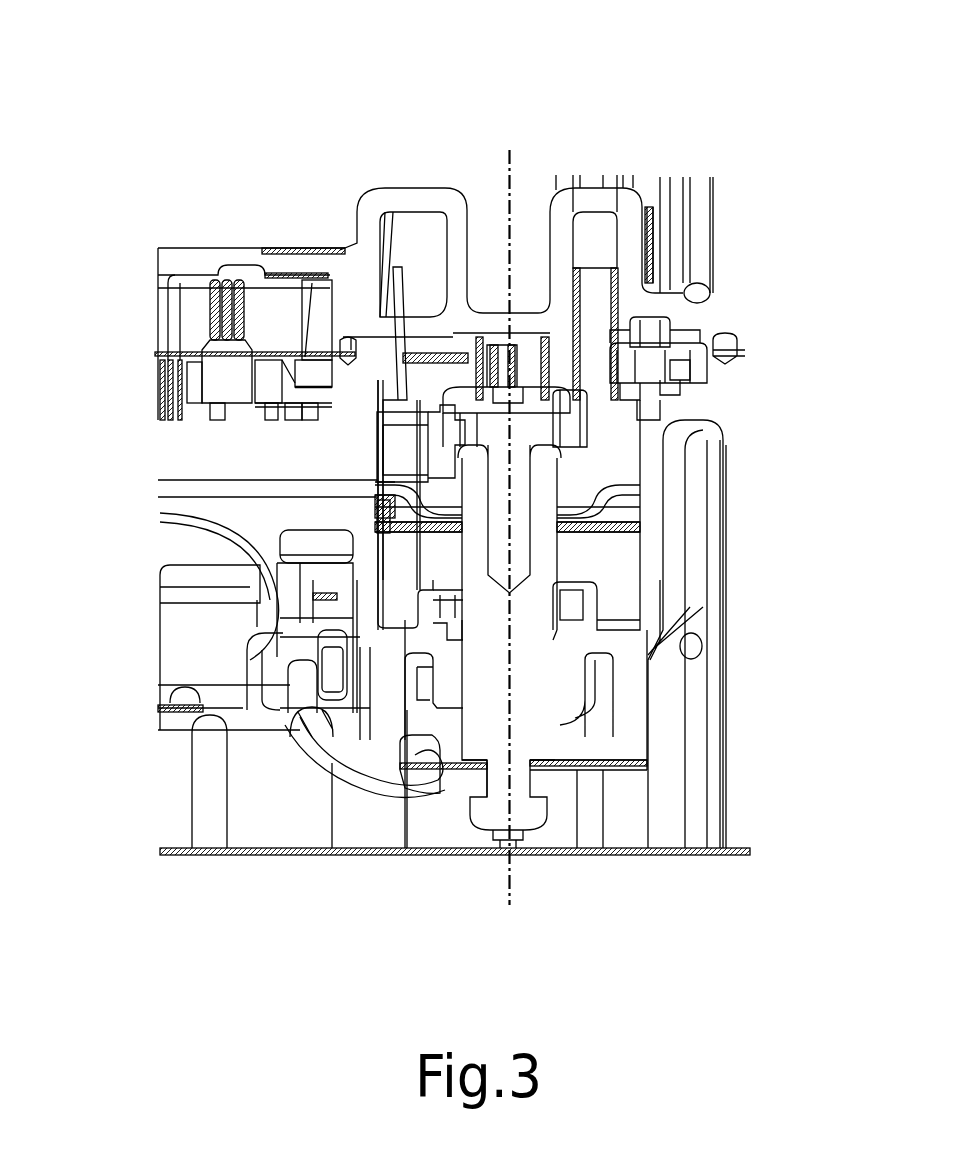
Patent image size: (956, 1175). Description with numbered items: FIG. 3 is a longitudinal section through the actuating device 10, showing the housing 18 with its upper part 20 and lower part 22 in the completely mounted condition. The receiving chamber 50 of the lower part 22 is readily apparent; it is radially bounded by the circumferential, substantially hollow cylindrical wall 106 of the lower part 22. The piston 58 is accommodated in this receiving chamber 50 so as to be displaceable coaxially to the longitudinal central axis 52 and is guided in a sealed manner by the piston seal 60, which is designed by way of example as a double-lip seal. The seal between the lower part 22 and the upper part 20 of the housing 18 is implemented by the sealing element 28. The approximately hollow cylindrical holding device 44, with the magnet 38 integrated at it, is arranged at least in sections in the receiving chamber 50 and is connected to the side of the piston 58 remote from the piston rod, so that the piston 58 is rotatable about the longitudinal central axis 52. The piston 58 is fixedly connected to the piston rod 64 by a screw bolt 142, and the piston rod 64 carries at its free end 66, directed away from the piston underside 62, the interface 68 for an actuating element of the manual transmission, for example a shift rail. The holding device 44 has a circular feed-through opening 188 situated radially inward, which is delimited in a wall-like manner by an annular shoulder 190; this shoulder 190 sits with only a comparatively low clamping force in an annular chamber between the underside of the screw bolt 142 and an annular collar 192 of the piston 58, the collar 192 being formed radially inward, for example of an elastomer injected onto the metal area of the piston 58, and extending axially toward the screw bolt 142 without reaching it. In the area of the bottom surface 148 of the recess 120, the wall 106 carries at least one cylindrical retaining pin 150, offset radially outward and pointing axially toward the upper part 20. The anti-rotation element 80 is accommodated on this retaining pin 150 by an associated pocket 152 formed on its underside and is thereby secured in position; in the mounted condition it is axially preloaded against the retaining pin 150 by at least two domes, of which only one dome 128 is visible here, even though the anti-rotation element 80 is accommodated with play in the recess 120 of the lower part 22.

The actuating device 10 is at (152, 100).
The housing 18 is at (407, 197).
The upper part 20 is at (525, 217).
The lower part 22 is at (173, 502).
The sealing element 28 is at (350, 352).
The magnet 38 is at (421, 461).
The holding device 44 is at (397, 295).
The receiving chamber 50 is at (635, 552).
The longitudinal central axis 52 is at (511, 157).
The piston 58 is at (612, 508).
The piston seal 60 is at (390, 503).
The piston underside 62 is at (415, 541).
The piston rod 64 is at (530, 745).
The free end 66 is at (483, 845).
The interface 68 is at (533, 783).
The anti-rotation element 80 is at (658, 385).
The wall 106 is at (652, 563).
The recess 120 is at (690, 370).
The dome 128 is at (655, 332).
The screw bolt 142 is at (500, 527).
The bottom surface 148 is at (657, 368).
The retaining pin 150 is at (627, 368).
The pocket 152 is at (673, 352).
The feed-through opening 188 is at (466, 432).
The shoulder 190 is at (560, 425).
The collar 192 is at (457, 438).